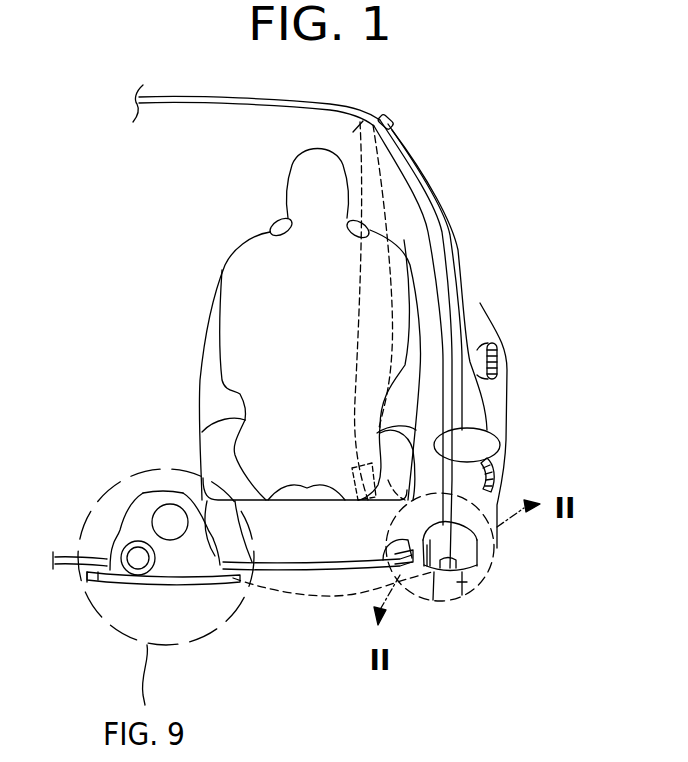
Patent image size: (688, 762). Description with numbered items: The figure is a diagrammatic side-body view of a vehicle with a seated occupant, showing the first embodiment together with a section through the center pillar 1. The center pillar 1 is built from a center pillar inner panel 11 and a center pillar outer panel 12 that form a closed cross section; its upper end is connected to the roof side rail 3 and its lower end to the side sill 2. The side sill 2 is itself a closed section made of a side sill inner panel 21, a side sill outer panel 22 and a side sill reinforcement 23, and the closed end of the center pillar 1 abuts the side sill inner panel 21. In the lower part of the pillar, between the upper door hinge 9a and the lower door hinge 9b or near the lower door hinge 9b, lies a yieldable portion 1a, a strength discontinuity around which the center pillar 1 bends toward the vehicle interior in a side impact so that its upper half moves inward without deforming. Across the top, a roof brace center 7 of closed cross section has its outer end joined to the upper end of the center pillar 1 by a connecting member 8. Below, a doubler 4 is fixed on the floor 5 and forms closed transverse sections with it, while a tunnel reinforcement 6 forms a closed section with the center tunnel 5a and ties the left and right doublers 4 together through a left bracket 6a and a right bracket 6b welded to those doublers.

The center pillar 1 is at (478, 233).
The yieldable portion 1a is at (450, 428).
The side sill 2 is at (483, 568).
The roof side rail 3 is at (407, 116).
The doubler 4 is at (63, 553).
The floor 5 is at (345, 596).
The center tunnel 5a is at (135, 508).
The tunnel reinforcement 6 is at (183, 583).
The left bracket 6a is at (222, 580).
The right bracket 6b is at (100, 597).
The roof brace center 7 is at (202, 105).
The connecting member 8 is at (353, 132).
The upper door hinge 9a is at (497, 362).
The lower door hinge 9b is at (492, 475).
The center pillar inner panel 11 is at (449, 292).
The center pillar outer panel 12 is at (441, 214).
The side sill inner panel 21 is at (433, 600).
The side sill outer panel 22 is at (482, 555).
The side sill reinforcement 23 is at (462, 592).